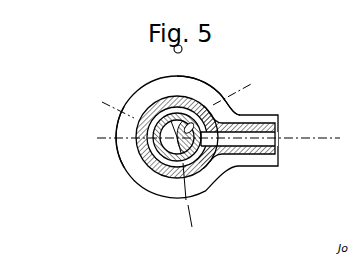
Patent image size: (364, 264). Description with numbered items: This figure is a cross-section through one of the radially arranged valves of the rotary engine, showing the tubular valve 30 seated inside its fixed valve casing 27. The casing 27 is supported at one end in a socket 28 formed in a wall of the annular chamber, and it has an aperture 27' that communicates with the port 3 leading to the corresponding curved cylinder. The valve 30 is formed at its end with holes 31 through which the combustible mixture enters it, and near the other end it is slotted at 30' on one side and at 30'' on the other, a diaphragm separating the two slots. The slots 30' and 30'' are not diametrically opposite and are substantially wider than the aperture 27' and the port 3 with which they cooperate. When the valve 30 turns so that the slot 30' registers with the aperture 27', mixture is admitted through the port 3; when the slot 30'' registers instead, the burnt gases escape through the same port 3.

The port 3 is at (262, 132).
The valve casing 27 is at (160, 161).
The aperture 27' is at (244, 154).
The socket 28 is at (143, 160).
The tubular valve 30 is at (197, 151).
The slot 30' is at (81, 137).
The slot 30'' is at (214, 85).
The holes 31 is at (178, 163).